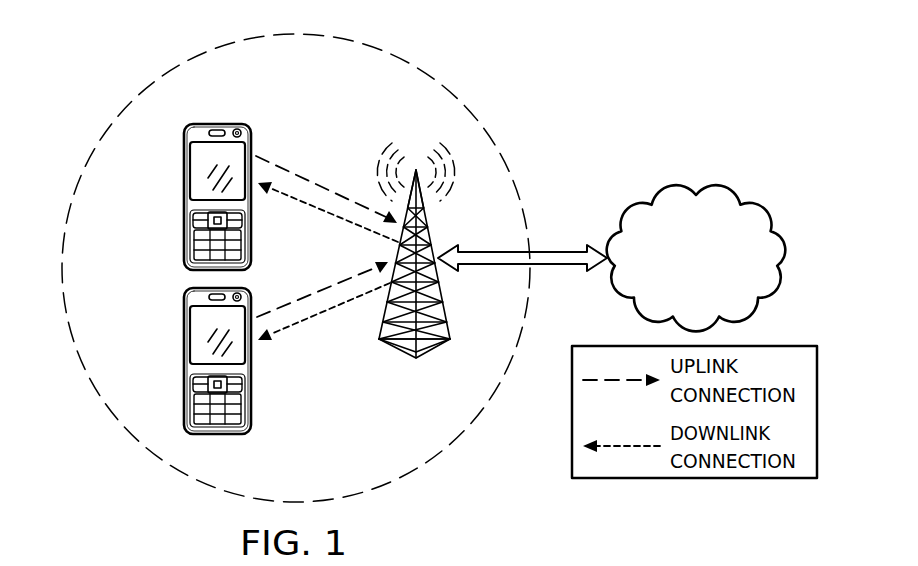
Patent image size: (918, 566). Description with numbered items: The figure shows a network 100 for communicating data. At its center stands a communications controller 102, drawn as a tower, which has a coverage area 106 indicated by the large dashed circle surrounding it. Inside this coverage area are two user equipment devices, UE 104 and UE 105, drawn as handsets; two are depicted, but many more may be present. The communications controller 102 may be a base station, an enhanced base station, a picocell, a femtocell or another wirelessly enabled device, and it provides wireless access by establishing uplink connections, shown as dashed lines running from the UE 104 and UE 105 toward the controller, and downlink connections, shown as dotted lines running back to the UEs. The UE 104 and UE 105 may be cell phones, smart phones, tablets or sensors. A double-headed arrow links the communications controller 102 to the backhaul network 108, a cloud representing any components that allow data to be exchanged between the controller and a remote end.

The network 100 is at (580, 108).
The communications controller 102 is at (437, 343).
The UE 104 is at (184, 192).
The UE 105 is at (184, 365).
The coverage area 106 is at (184, 58).
The backhaul network 108 is at (696, 194).